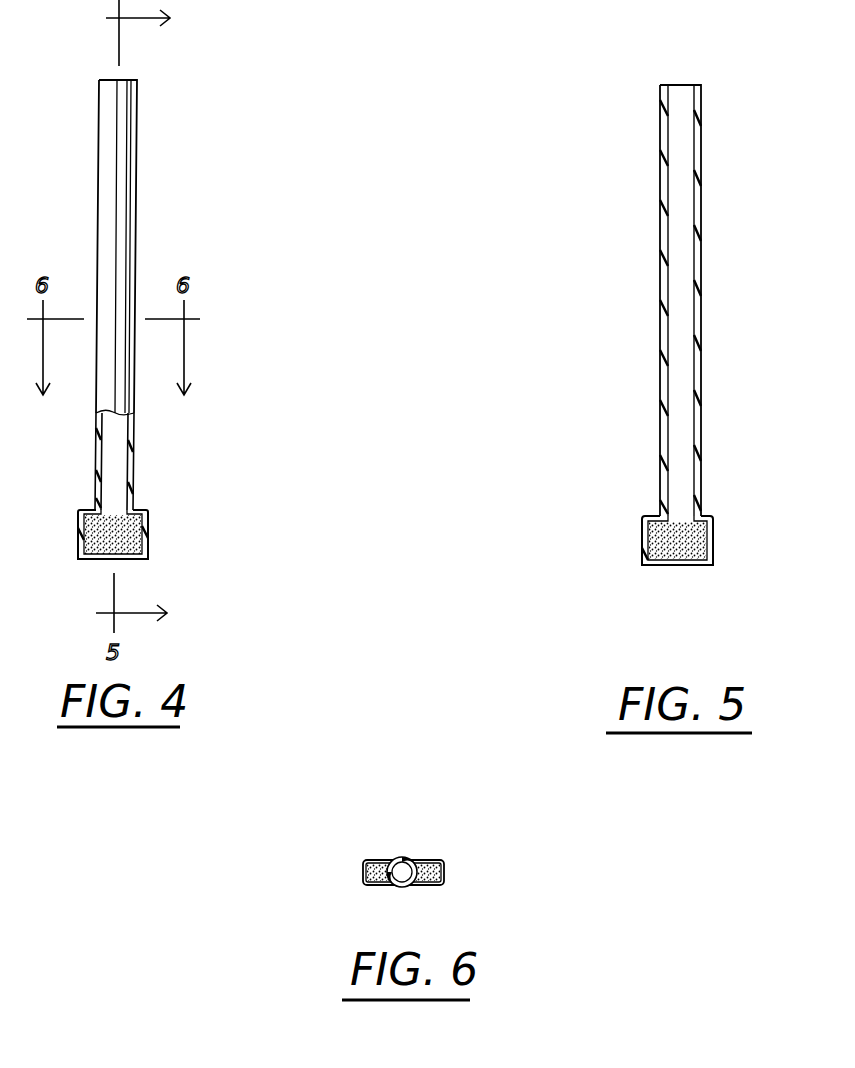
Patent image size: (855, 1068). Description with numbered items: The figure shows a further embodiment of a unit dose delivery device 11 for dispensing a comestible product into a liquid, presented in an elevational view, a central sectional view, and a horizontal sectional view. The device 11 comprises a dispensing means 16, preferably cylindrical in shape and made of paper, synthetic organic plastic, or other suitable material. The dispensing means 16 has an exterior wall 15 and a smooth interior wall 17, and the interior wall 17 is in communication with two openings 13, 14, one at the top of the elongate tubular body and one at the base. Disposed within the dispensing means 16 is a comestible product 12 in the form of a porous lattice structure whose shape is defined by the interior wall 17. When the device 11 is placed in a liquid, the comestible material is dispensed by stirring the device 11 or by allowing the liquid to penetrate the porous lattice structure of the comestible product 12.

In FIG. 4, the device 11 is at (150, 178).
In FIG. 5, the device 11 is at (713, 182).
In FIG. 6, the device 11 is at (422, 892).
In FIG. 4, the comestible product 12 is at (125, 533).
In FIG. 5, the comestible product 12 is at (690, 546).
In FIG. 6, the comestible product 12 is at (416, 862).
In FIG. 4, the opening 13 is at (122, 80).
In FIG. 5, the opening 13 is at (680, 85).
In FIG. 4, the opening 14 is at (100, 563).
In FIG. 5, the opening 14 is at (683, 568).
In FIG. 6, the opening 14 is at (403, 872).
In FIG. 4, the exterior wall 15 is at (135, 440).
In FIG. 5, the exterior wall 15 is at (700, 378).
In FIG. 6, the exterior wall 15 is at (412, 858).
In FIG. 4, the dispensing means 16 is at (100, 225).
In FIG. 4, the interior wall 17 is at (95, 447).
In FIG. 5, the interior wall 17 is at (598, 400).
In FIG. 6, the interior wall 17 is at (394, 862).